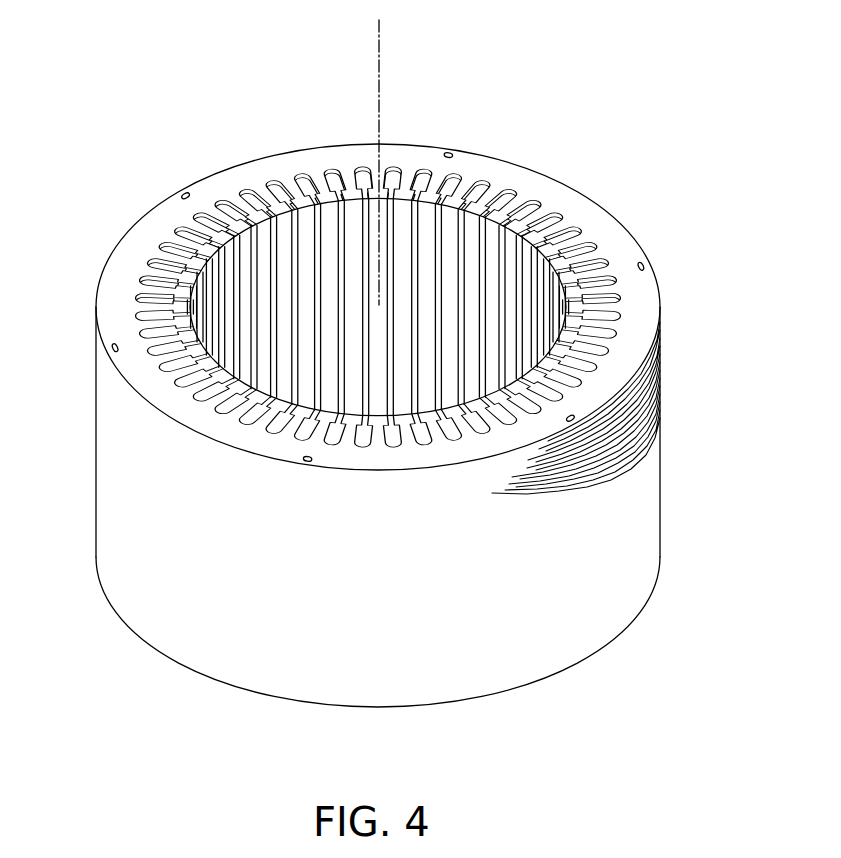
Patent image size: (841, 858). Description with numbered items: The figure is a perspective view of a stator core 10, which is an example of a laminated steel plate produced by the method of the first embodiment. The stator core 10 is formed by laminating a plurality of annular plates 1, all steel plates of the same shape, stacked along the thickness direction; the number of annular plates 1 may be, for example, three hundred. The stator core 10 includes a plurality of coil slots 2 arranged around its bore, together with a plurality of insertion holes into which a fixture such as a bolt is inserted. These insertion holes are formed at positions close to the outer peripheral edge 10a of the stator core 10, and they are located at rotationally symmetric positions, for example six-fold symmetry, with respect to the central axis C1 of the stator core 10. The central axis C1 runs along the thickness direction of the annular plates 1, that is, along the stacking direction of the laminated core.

The annular plate 1 is at (273, 155).
The coil slot 2 is at (341, 168).
The stator core 10 is at (382, 363).
The outer peripheral edge 10a is at (455, 468).
The central axis C1 is at (380, 77).